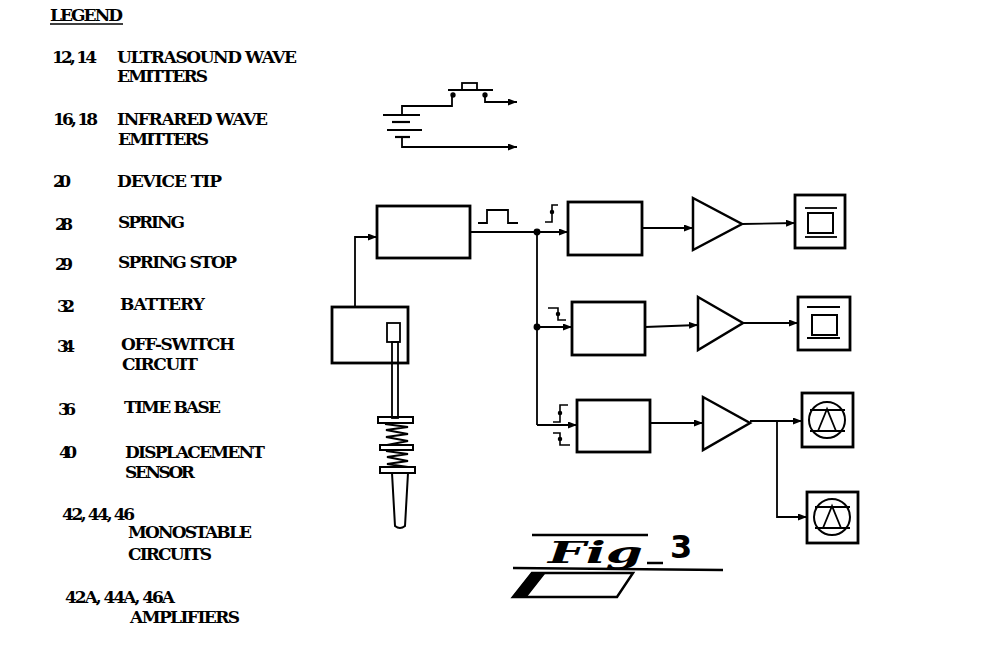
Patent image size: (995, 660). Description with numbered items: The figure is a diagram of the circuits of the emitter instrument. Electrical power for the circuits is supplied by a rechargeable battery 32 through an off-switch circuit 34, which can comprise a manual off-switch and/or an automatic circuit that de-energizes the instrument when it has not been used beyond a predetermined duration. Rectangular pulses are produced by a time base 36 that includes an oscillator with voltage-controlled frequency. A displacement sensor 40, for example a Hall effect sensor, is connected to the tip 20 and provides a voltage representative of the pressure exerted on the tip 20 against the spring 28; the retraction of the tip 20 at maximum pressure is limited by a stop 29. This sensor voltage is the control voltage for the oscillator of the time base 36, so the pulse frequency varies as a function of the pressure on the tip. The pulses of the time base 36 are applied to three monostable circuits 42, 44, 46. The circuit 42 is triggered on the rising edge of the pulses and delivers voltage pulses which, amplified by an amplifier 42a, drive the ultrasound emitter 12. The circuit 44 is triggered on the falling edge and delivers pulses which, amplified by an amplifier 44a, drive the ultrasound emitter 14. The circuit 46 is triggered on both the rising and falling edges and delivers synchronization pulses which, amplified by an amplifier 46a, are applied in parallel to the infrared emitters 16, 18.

The ultrasound emitter 12 is at (820, 198).
The ultrasound emitter 14 is at (818, 296).
The infrared emitter 16 is at (825, 393).
The infrared emitter 18 is at (820, 492).
The tip 20 is at (403, 503).
The spring 28 is at (410, 457).
The stop 29 is at (380, 448).
The rechargeable battery 32 is at (387, 127).
The off-switch circuit 34 is at (467, 83).
The time base 36 is at (443, 209).
The displacement sensor 40 is at (378, 307).
The monostable circuit 42 is at (605, 205).
The monostable circuit 44 is at (607, 305).
The monostable circuit 46 is at (610, 410).
The amplifier 42a is at (711, 215).
The amplifier 44a is at (717, 312).
The amplifier 46a is at (718, 413).